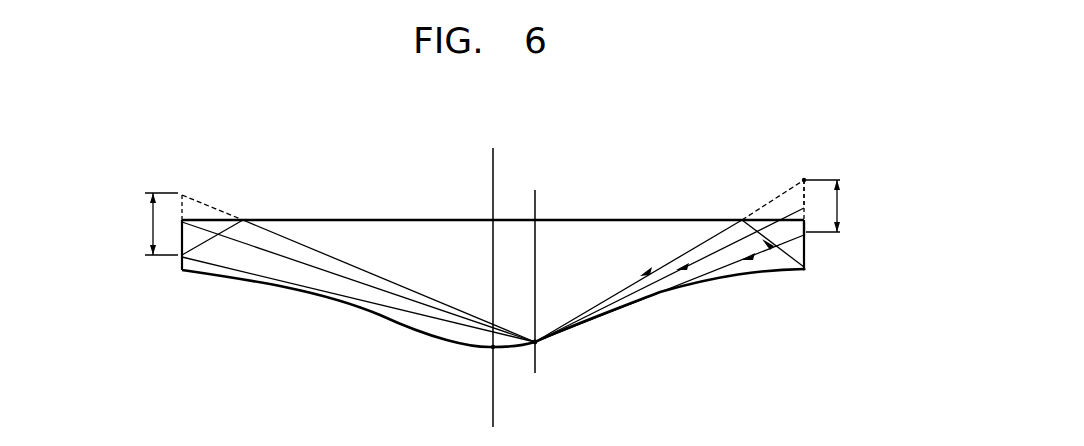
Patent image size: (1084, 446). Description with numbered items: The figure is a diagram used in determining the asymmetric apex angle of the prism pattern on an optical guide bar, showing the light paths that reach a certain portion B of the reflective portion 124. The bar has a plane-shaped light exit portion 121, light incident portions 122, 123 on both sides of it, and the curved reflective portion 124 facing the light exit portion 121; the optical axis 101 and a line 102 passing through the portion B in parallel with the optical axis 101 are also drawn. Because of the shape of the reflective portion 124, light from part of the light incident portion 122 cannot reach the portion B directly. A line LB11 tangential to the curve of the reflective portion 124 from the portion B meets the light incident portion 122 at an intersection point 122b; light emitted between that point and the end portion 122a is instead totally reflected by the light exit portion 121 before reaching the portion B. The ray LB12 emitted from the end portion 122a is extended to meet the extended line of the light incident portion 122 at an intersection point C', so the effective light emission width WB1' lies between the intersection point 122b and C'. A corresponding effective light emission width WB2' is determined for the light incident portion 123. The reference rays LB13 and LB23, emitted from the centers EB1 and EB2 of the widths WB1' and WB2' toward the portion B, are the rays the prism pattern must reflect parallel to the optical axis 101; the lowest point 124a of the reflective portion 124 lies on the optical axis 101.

The optical axis 101 is at (494, 178).
The line 102 is at (537, 207).
The light exit portion 121 is at (410, 218).
The light incident portion 122 is at (802, 257).
The end portion 122a is at (804, 270).
The intersection point 122b is at (805, 235).
The light incident portion 123 is at (182, 247).
The reflective portion 124 is at (387, 320).
The lowest point of bottom surface 124a is at (490, 349).
The portion of the reflective portion B is at (538, 343).
The intersection point C' is at (805, 166).
The center of effective light emission width EB1 is at (803, 208).
The center of effective light emission width EB2 is at (203, 220).
The line tangential to the reflective portion LB11 is at (720, 267).
The ray of light LB12 is at (717, 230).
The reference ray of light LB13 is at (742, 226).
The reference ray of light LB23 is at (265, 250).
The effective light emission width WB1' is at (846, 206).
The effective light emission width WB2' is at (136, 224).